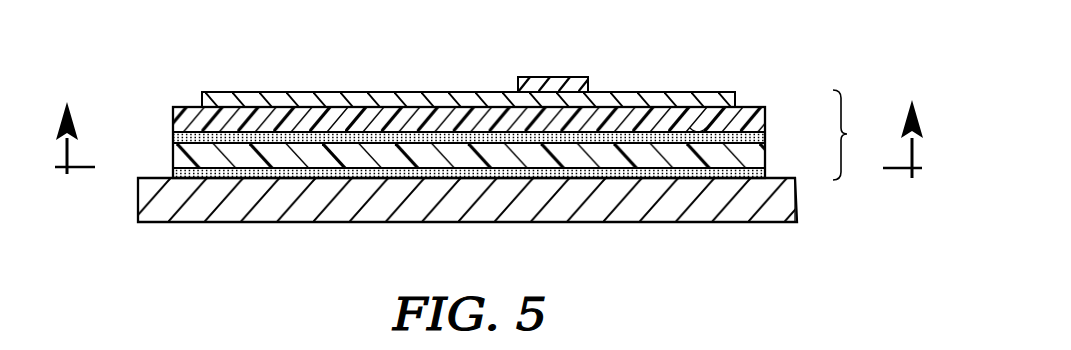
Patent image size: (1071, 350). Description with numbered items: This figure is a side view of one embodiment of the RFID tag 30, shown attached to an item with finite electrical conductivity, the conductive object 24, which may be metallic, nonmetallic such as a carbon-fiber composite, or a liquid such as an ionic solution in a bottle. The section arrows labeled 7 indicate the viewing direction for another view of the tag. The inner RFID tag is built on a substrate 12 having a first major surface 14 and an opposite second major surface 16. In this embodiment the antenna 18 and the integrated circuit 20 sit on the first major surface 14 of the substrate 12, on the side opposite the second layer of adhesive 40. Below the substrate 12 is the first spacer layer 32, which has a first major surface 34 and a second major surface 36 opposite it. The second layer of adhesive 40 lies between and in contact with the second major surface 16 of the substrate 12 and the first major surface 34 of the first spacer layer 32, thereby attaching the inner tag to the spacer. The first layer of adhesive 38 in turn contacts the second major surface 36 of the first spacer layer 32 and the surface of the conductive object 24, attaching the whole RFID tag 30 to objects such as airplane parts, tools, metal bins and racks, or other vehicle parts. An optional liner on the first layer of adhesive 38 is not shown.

The section line 7-7 viewing direction 7 is at (492, 116).
The substrate 12 is at (628, 116).
The first major surface 14 is at (751, 107).
The second major surface 16 is at (707, 128).
The antenna 18 is at (367, 98).
The integrated circuit 20 is at (556, 85).
The conductive object 24 is at (660, 221).
The RFID tag 30 is at (858, 135).
The first spacer layer 32 is at (748, 153).
The first major surface 34 is at (750, 130).
The second major surface 36 is at (736, 178).
The first layer of adhesive 38 is at (173, 172).
The second layer of adhesive 40 is at (173, 137).